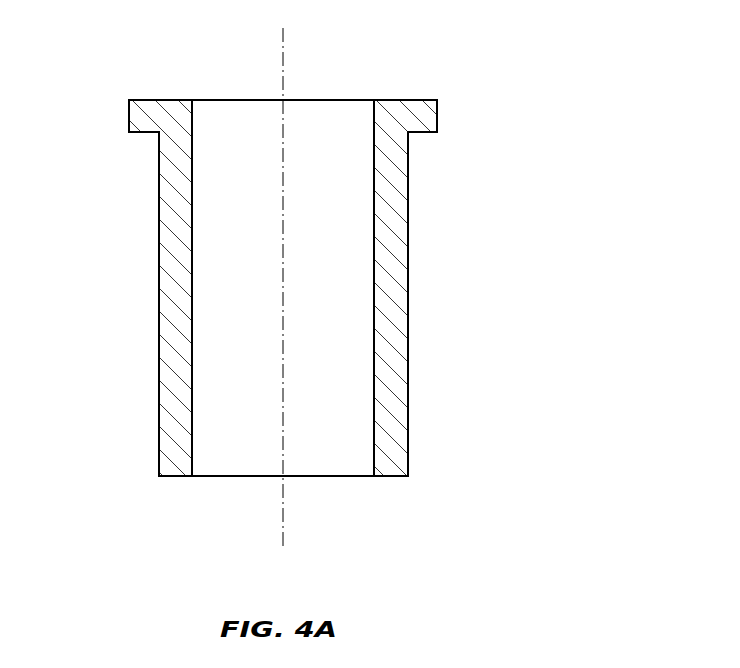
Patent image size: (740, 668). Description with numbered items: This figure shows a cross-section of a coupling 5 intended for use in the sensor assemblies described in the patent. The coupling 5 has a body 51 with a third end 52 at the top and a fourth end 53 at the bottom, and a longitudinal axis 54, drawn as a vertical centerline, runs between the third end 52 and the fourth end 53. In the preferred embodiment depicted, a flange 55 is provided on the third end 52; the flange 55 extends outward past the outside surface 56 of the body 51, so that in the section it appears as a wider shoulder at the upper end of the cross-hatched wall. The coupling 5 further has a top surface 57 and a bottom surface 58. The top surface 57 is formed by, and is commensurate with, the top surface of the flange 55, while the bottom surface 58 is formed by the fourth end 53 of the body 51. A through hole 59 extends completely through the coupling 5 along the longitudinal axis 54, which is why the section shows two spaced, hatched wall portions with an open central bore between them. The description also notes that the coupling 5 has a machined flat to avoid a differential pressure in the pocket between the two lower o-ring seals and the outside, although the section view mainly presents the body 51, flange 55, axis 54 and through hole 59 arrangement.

The coupling 5 is at (370, 334).
The body 51 is at (408, 336).
The third end 52 is at (414, 100).
The fourth end 53 is at (393, 476).
The longitudinal axis 54 is at (283, 52).
The flange 55 is at (437, 118).
The outside surface 56 is at (408, 214).
The top surface 57 is at (150, 100).
The bottom surface 58 is at (183, 476).
The through hole 59 is at (245, 130).